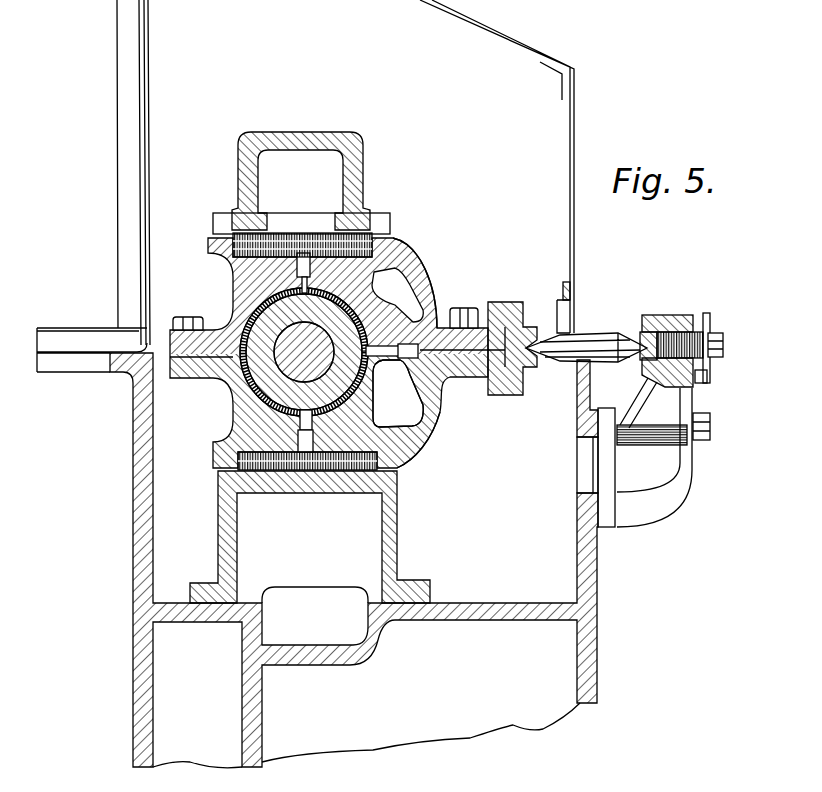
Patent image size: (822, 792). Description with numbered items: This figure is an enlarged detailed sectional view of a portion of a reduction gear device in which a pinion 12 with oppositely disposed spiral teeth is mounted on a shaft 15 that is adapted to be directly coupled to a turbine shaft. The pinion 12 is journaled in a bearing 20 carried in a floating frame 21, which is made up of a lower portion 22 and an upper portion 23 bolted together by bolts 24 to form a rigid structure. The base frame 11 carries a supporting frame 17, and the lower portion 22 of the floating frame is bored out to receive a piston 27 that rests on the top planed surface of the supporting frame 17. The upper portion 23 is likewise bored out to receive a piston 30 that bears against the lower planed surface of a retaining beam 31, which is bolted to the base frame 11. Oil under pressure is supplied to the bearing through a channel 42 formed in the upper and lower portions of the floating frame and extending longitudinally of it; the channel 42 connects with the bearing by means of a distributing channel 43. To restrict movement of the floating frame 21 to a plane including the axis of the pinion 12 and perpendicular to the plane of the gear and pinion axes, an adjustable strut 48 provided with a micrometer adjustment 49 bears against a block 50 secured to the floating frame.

The base frame 11 is at (140, 559).
The pinion 12 is at (236, 401).
The shaft 15 is at (304, 352).
The supporting frame 17 is at (395, 541).
The bearing 20 is at (222, 305).
The floating frame 21 is at (418, 420).
The lower portion of floating frame 22 is at (400, 447).
The upper portion of floating frame 23 is at (413, 278).
The bolts 24 is at (187, 317).
The piston 27 is at (335, 468).
The piston 30 is at (277, 240).
The retaining beam 31 is at (357, 157).
The channel 42 is at (410, 355).
The distributing channels 43 is at (405, 357).
The adjustable struts 48 is at (592, 342).
The micrometer adjustments 49 is at (683, 328).
The blocks 50 is at (523, 308).